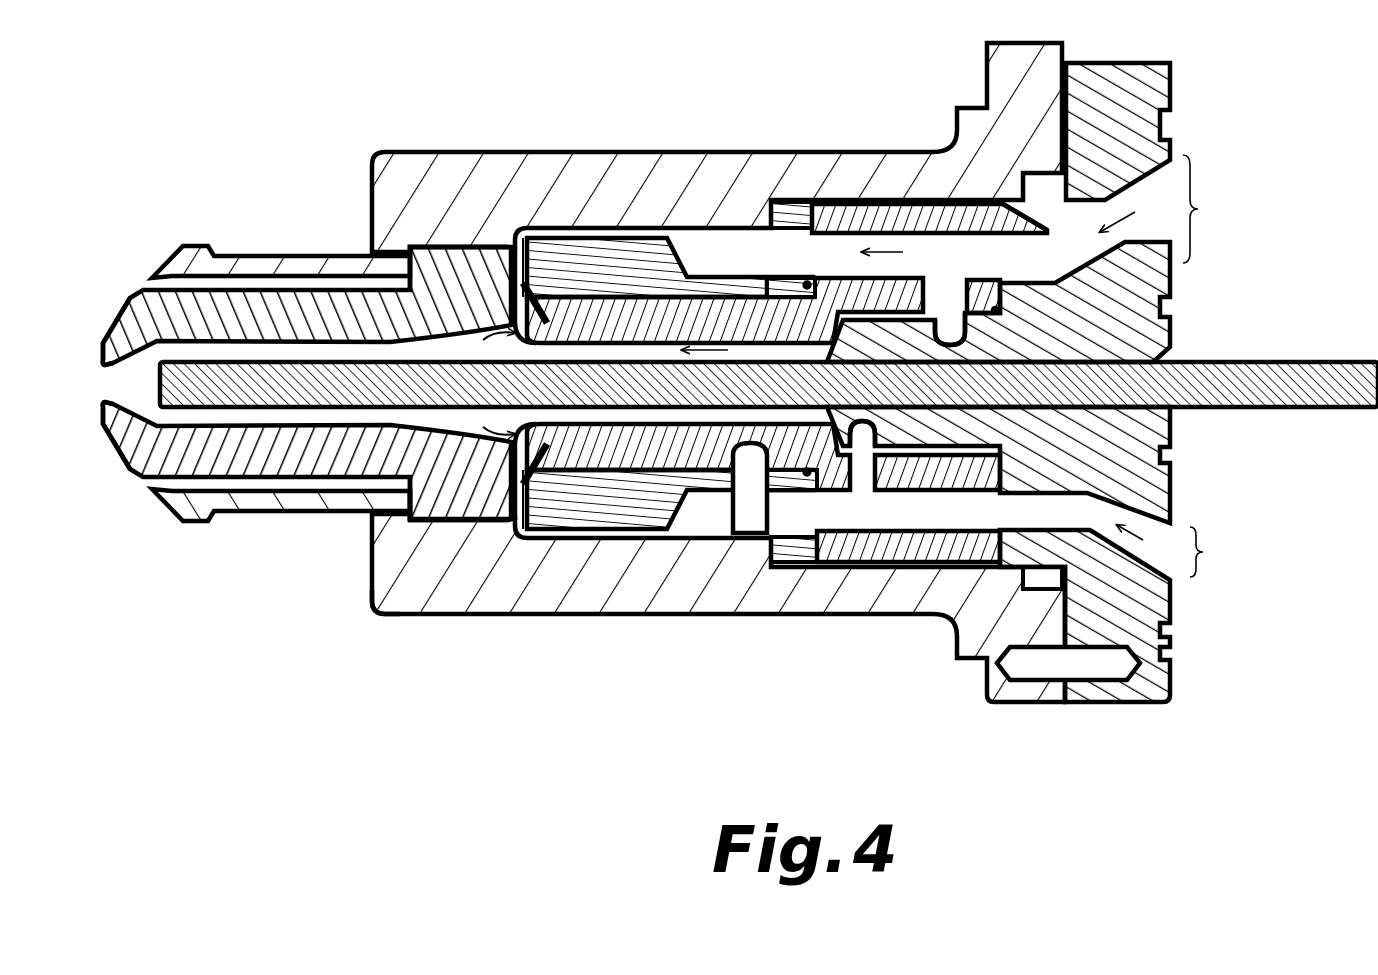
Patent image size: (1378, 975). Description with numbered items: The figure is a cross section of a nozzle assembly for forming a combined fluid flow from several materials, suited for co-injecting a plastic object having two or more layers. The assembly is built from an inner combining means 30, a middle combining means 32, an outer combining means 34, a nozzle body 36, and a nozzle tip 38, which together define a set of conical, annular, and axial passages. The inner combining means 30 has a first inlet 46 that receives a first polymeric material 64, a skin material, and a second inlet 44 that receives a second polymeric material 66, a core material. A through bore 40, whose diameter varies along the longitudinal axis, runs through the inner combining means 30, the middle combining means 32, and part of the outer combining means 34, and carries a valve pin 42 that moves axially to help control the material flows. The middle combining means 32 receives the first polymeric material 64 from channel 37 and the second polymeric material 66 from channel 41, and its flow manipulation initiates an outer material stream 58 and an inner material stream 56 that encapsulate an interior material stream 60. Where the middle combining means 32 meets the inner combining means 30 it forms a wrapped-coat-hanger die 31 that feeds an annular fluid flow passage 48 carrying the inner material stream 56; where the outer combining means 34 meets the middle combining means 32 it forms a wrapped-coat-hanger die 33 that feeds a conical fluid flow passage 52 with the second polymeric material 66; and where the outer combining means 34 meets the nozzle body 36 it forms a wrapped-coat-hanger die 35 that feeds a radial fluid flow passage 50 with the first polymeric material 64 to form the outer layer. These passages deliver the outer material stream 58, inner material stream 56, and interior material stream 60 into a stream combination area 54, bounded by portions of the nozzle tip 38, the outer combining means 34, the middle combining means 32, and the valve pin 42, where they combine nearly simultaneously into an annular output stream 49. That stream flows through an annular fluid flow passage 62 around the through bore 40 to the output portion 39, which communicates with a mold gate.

The inner combining means 30 is at (998, 382).
The wrapped-coat-hanger die 31 is at (940, 323).
The middle combining means 32 is at (930, 210).
The wrapped-coat-hanger die 33 is at (597, 297).
The outer combining means 34 is at (672, 382).
The wrapped-coat-hanger die 35 is at (703, 250).
The nozzle body 36 is at (628, 152).
The channel 37 is at (1013, 230).
The nozzle tip 38 is at (307, 383).
The output portion 39 is at (105, 405).
The through bore 40 is at (1160, 352).
The channel 41 is at (1030, 494).
The valve pin 42 is at (1290, 405).
The second inlet 44 is at (1215, 552).
The first inlet 46 is at (1213, 209).
The annular fluid flow passage 48 is at (802, 476).
The annular output stream 49 is at (481, 388).
The radial fluid flow passage 50 is at (372, 606).
The conical fluid flow passage 52 is at (505, 523).
The stream combination area 54 is at (493, 318).
The inner material stream 56 is at (733, 297).
The outer material stream 58 is at (900, 252).
The interior material stream 60 is at (548, 250).
The fluid flow passage 62 is at (363, 262).
The first polymeric material 64 is at (1135, 209).
The second polymeric material 66 is at (1148, 544).